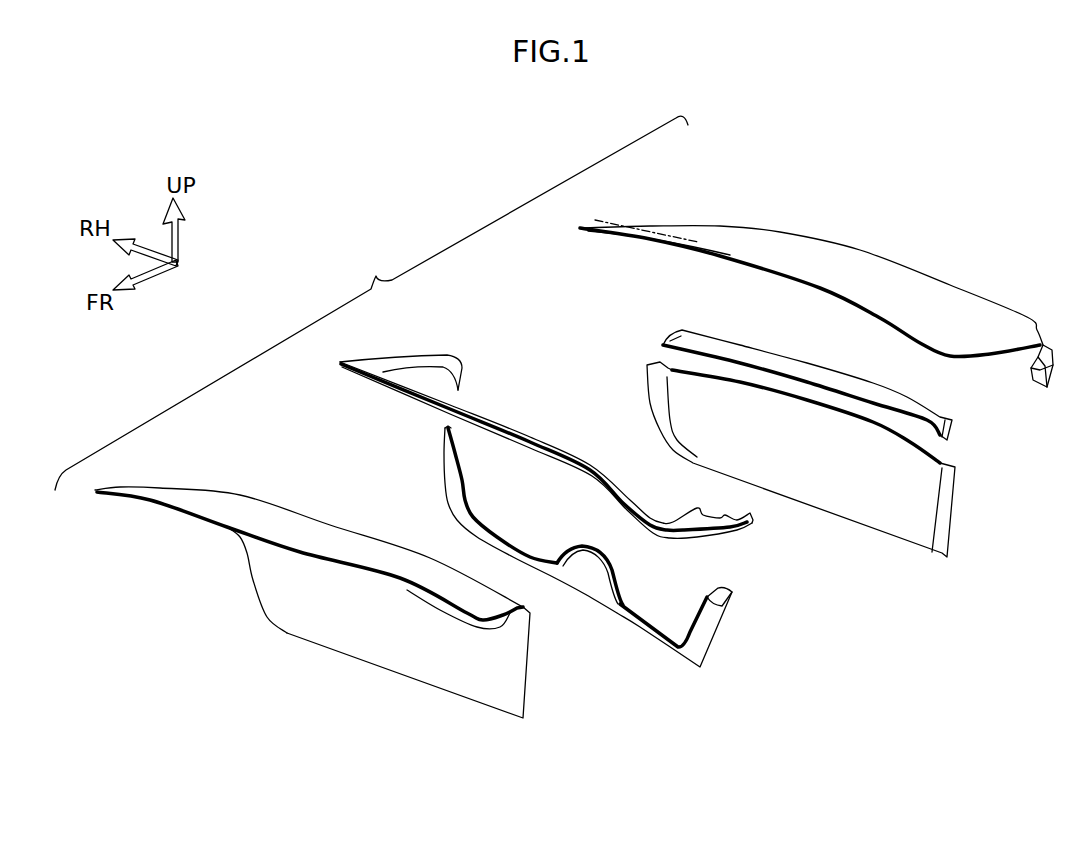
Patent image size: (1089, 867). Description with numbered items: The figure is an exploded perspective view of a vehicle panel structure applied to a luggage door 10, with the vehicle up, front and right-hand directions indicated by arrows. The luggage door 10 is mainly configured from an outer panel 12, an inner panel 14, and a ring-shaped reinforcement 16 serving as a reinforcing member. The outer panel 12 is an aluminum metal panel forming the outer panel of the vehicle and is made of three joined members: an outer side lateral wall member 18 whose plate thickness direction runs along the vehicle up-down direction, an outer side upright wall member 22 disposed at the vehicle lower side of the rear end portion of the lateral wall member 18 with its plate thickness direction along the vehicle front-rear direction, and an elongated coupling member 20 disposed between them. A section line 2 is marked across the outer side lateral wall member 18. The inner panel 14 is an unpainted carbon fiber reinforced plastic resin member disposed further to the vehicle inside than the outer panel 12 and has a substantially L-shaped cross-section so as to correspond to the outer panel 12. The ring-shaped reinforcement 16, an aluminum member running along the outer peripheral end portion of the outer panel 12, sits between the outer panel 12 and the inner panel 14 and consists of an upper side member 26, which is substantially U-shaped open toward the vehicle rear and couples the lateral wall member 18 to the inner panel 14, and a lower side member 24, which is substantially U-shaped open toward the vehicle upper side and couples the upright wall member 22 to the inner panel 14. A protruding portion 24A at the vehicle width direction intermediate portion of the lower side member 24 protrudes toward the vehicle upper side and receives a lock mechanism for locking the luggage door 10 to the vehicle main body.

The section line 2- 2 is at (597, 218).
The luggage door 10 is at (371, 303).
The outer panel 12 is at (830, 397).
The inner panel 14 is at (382, 662).
The ring-shaped reinforcement 16 is at (588, 588).
The outer side lateral wall member 18 is at (816, 283).
The coupling member 20 is at (778, 353).
The outer side upright wall member 22 is at (860, 520).
The lower side member 24 is at (589, 601).
The protruding portion 24A is at (626, 575).
The upper side member 26 is at (741, 530).